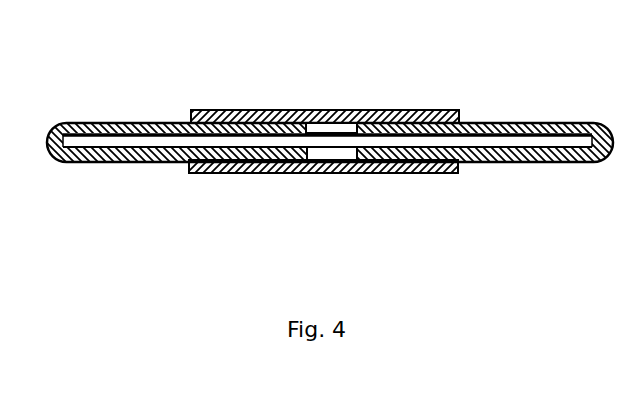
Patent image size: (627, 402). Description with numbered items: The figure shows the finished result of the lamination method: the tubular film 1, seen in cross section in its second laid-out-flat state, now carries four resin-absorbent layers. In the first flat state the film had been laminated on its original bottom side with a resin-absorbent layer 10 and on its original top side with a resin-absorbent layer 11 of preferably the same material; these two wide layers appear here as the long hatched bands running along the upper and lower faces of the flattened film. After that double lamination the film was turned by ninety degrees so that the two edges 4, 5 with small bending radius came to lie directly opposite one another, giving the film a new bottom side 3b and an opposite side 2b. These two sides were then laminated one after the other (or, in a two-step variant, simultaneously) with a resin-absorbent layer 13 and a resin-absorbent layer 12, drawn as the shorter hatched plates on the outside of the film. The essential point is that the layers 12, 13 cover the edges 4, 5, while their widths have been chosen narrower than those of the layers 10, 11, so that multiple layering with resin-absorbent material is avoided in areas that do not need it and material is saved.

The tubular film 1 is at (322, 137).
The resin-absorbent layer 10 is at (123, 160).
The resin-absorbent layer 11 is at (547, 123).
The resin-absorbent layer 13 is at (283, 111).
The resin-absorbent layer 12 is at (368, 172).
The edge 4 is at (343, 133).
The edge 5 is at (328, 150).
The bottom side 3b is at (462, 75).
The side 2b is at (243, 207).